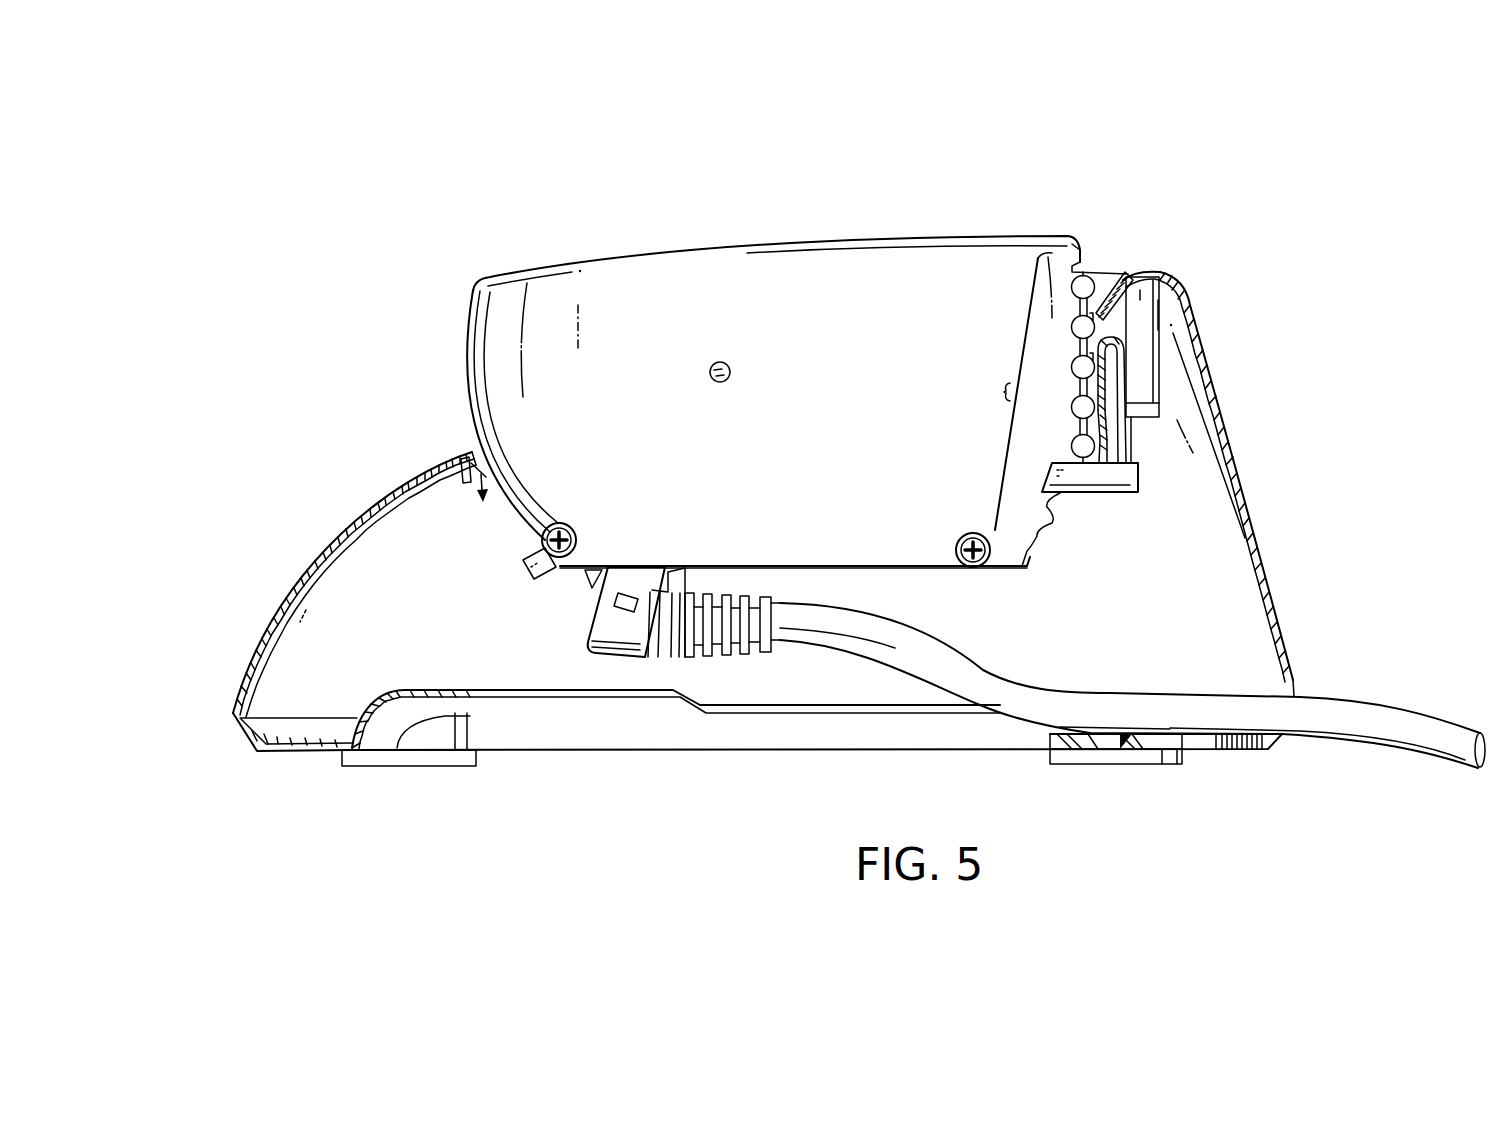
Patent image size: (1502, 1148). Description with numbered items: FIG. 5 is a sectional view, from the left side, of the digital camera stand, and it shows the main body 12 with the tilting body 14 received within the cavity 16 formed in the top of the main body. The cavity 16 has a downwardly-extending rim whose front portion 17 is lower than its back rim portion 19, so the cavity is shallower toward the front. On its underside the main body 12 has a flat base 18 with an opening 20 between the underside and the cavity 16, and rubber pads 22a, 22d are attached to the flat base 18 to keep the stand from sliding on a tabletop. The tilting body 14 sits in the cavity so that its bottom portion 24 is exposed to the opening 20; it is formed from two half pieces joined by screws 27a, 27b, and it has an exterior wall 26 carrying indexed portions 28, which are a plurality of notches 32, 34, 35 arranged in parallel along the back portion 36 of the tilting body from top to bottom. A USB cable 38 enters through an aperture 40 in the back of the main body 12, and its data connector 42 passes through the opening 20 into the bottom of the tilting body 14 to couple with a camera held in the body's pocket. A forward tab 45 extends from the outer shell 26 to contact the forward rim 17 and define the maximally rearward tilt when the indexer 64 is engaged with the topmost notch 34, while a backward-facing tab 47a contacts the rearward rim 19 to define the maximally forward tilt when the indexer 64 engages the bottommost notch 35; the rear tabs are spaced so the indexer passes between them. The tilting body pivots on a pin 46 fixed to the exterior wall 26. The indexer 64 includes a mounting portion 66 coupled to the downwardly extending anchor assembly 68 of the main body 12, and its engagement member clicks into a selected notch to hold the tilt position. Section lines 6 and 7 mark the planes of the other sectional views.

The section line 6- 6 is at (228, 672).
The section line 7- 7 is at (723, 225).
The main body 12 is at (1266, 480).
The tilting body 14 is at (850, 226).
The cavity 16 is at (470, 449).
The front rim portion 17 is at (462, 468).
The flat base 18 is at (508, 753).
The back rim portion 19 is at (1105, 285).
The opening 20 is at (574, 722).
The rubber pad 22a is at (407, 768).
The rubber pad 22d is at (1100, 766).
The bottom portion of tilting body 24 is at (903, 568).
The exterior wall 26 is at (629, 443).
The screw 27a is at (574, 530).
The screw 27b is at (958, 540).
The indexed portions 28 is at (1012, 391).
The notch 32 is at (1075, 412).
The topmost notch 34 is at (1065, 367).
The bottommost notch 35 is at (1046, 470).
The back portion of tilting body 36 is at (1083, 254).
The USB cable 38 is at (1418, 714).
The aperture 40 is at (1300, 691).
The data connector 42 is at (588, 640).
The forward tab 45 is at (538, 568).
The pin 46 is at (712, 365).
The backward-facing tab 47a is at (1090, 494).
The indexer 64 is at (1156, 451).
The mounting portion 66 is at (1160, 410).
The anchor assembly 68 is at (1160, 316).